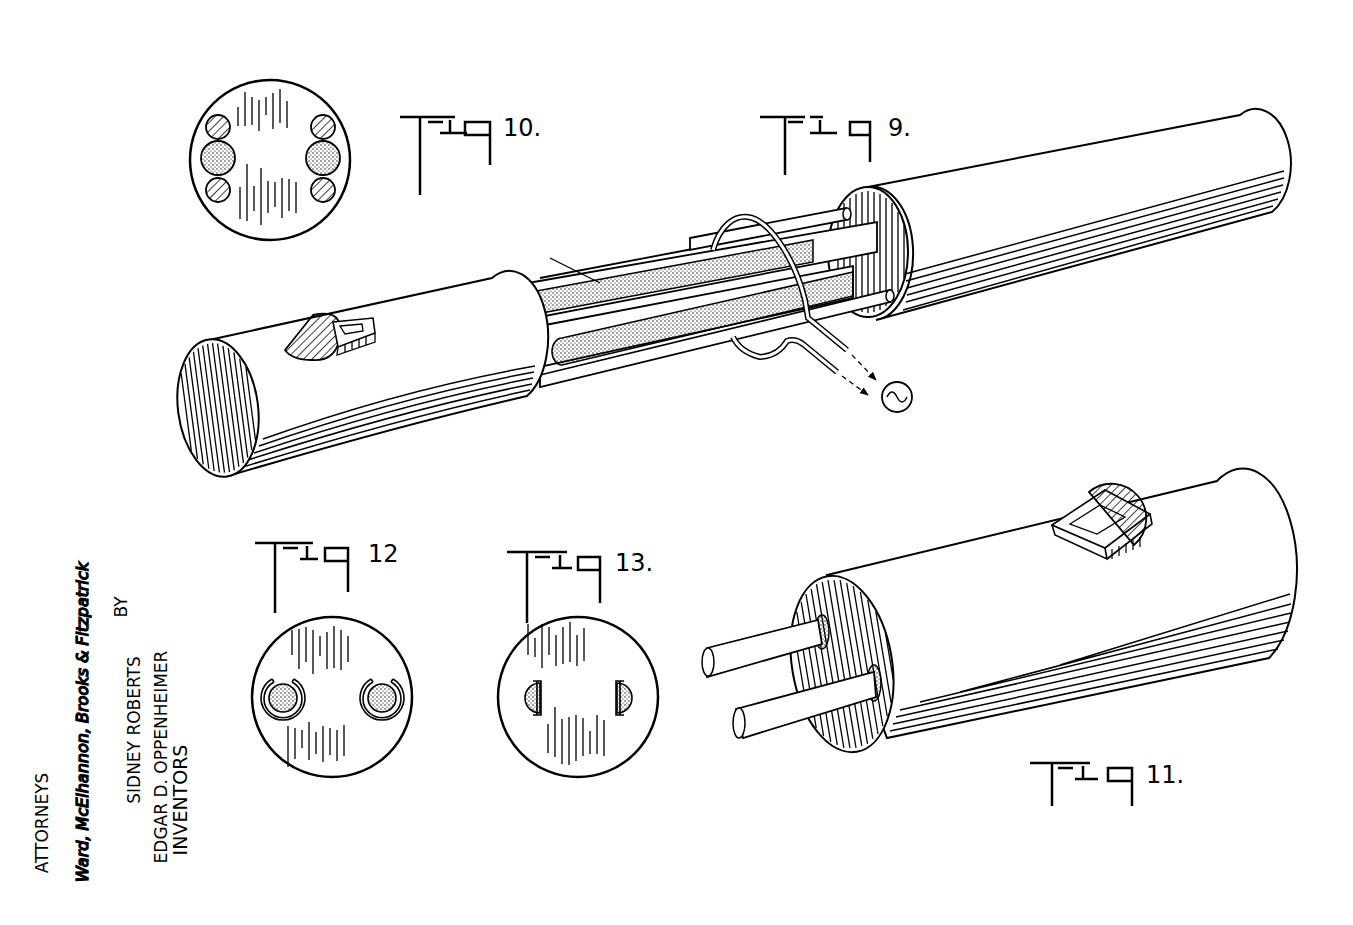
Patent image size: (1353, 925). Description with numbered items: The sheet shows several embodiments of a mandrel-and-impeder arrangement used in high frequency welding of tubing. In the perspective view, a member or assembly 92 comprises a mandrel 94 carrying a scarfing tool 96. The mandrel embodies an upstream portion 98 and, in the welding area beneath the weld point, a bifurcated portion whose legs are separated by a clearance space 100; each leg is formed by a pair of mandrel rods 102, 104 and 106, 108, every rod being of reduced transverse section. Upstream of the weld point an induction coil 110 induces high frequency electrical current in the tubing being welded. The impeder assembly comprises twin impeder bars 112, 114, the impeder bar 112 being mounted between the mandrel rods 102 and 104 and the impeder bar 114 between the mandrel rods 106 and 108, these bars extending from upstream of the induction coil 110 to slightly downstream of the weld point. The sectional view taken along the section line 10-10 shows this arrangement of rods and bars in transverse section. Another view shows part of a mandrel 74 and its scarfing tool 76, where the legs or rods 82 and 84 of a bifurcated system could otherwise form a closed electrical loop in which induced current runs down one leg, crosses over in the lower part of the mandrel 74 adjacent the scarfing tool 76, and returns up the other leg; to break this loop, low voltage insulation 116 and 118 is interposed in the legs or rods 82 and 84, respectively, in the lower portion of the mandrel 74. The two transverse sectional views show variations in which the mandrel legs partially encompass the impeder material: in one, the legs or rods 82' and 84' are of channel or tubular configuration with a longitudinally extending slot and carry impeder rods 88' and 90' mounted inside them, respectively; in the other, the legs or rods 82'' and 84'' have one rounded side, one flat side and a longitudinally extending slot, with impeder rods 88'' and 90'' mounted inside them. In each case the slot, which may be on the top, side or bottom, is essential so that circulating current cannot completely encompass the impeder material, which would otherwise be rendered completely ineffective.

In FIG. 9, the section line 10 is at (578, 250).
In FIG. 11, the mandrel 74 is at (953, 558).
In FIG. 11, the scarfing tool 76 is at (1136, 514).
In FIG. 11, the leg or rod 82 is at (762, 632).
In FIG. 11, the leg or rod 84 is at (804, 721).
In FIG. 12, the leg or rod 82' is at (407, 720).
In FIG. 12, the leg or rod 84' is at (265, 734).
In FIG. 12, the impeder rod 88' is at (358, 688).
In FIG. 12, the impeder rod 90' is at (301, 699).
In FIG. 13, the leg or rod 82'' is at (654, 725).
In FIG. 13, the leg or rod 84'' is at (501, 723).
In FIG. 13, the impeder rod 88'' is at (656, 701).
In FIG. 13, the impeder rod 90'' is at (496, 699).
In FIG. 9, the assembly 92 is at (730, 298).
In FIG. 9, the mandrel 94 is at (395, 412).
In FIG. 9, the scarfing tool 96 is at (308, 322).
In FIG. 9, the upstream portion 98 is at (1085, 158).
In FIG. 10, the upstream portion 98 is at (298, 110).
In FIG. 9, the clearance space 100 is at (590, 318).
In FIG. 9, the mandrel rod 102 is at (558, 377).
In FIG. 10, the mandrel rod 102 is at (330, 195).
In FIG. 9, the mandrel rod 104 is at (657, 318).
In FIG. 10, the mandrel rod 104 is at (330, 122).
In FIG. 10, the mandrel rod 106 is at (210, 192).
In FIG. 9, the mandrel rod 108 is at (802, 227).
In FIG. 10, the mandrel rod 108 is at (210, 125).
In FIG. 9, the induction coil 110 is at (835, 335).
In FIG. 9, the impeder bar 112 is at (660, 352).
In FIG. 10, the impeder bar 112 is at (337, 165).
In FIG. 9, the impeder bar 114 is at (658, 280).
In FIG. 10, the impeder bar 114 is at (207, 158).
In FIG. 11, the low voltage insulation 116 is at (815, 599).
In FIG. 11, the low voltage insulation 118 is at (886, 740).